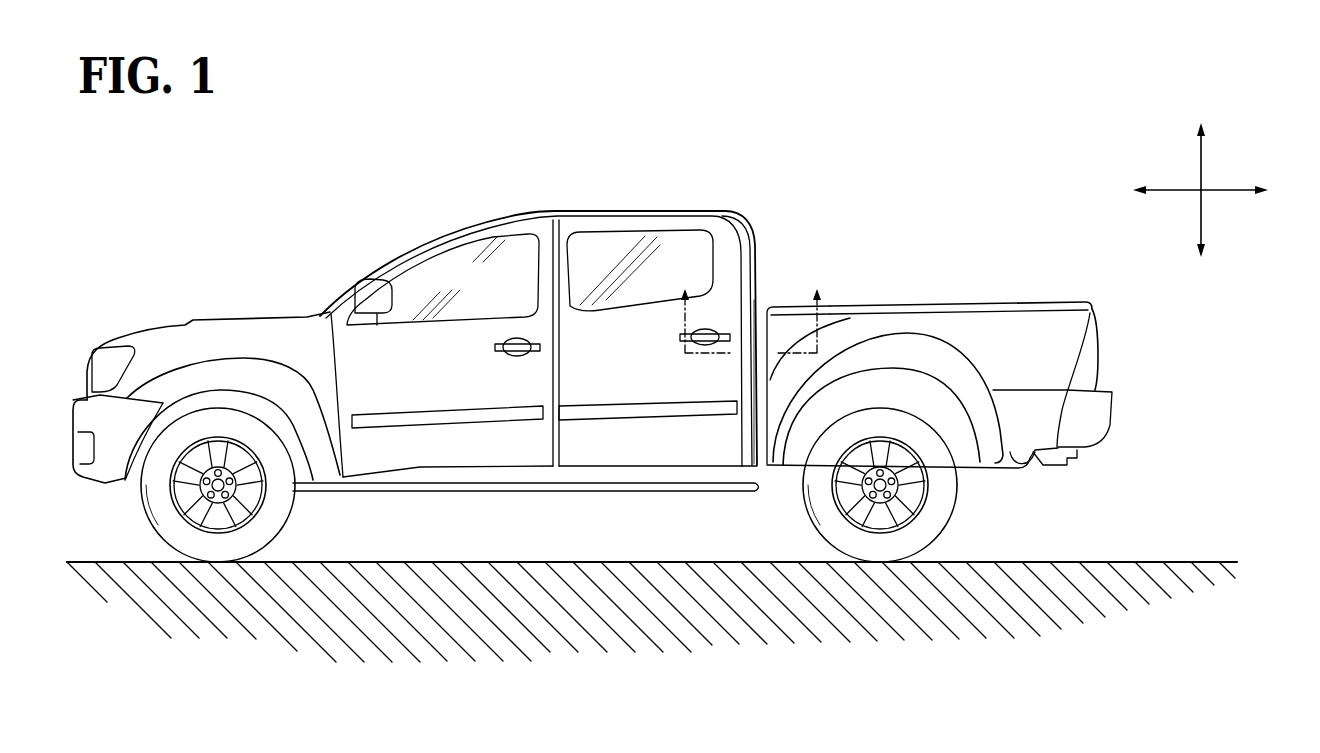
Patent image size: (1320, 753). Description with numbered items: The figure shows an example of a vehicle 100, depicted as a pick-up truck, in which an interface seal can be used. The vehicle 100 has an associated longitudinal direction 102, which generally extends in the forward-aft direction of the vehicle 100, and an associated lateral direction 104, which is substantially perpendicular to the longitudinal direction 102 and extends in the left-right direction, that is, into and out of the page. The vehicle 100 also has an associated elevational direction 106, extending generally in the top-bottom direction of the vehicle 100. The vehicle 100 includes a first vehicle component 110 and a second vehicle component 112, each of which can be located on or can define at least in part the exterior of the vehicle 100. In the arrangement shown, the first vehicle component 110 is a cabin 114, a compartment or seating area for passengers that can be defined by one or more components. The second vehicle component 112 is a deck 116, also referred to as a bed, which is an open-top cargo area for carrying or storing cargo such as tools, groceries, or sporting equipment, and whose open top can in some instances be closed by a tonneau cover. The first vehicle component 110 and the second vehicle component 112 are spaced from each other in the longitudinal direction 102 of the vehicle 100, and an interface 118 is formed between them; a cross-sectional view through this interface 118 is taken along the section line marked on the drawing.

The vehicle 100 is at (758, 172).
The longitudinal direction 102 is at (1235, 195).
The lateral direction 104 is at (1201, 190).
The elevational direction 106 is at (1205, 228).
The first vehicle component 110 is at (657, 202).
The second vehicle component 112 is at (858, 292).
The cabin 114 is at (737, 456).
The deck 116 is at (782, 325).
The interface 118 is at (750, 418).